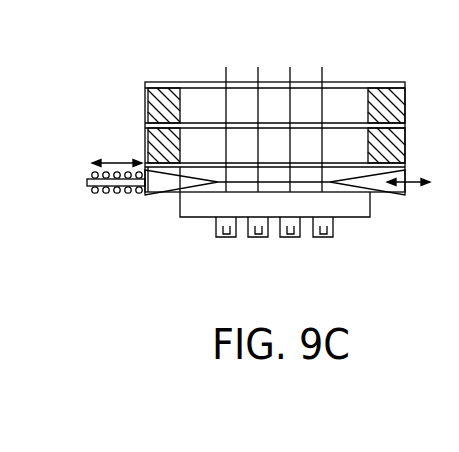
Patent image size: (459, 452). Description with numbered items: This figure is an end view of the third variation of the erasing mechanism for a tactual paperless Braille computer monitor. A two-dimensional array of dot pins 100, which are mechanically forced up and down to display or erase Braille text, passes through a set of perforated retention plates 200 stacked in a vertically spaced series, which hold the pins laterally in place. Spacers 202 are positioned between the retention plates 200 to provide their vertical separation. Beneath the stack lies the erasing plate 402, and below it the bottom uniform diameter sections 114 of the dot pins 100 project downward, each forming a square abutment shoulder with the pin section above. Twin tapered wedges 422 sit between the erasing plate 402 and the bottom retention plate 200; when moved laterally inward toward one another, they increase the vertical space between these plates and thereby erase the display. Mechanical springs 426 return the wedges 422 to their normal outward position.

The dot pin 100 is at (228, 77).
The retention plate 200 is at (195, 82).
The spacer 202 is at (150, 142).
The erasing plate 402 is at (207, 209).
The tapered wedge 422 is at (155, 183).
The mechanical spring 426 is at (125, 196).
The bottom uniform diameter section 114 is at (258, 238).